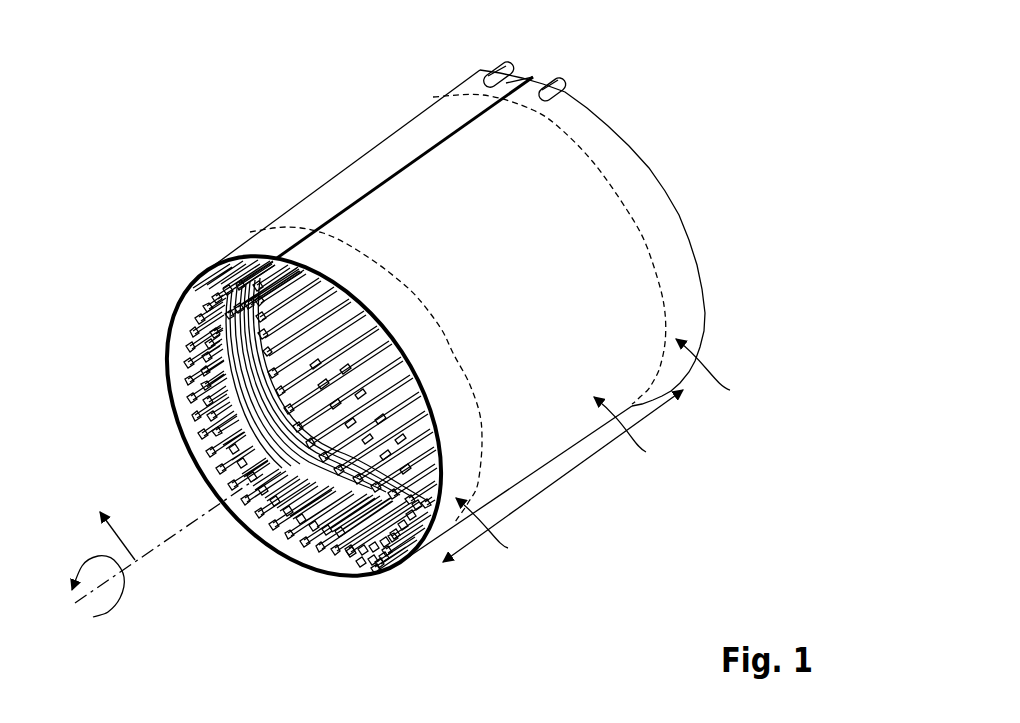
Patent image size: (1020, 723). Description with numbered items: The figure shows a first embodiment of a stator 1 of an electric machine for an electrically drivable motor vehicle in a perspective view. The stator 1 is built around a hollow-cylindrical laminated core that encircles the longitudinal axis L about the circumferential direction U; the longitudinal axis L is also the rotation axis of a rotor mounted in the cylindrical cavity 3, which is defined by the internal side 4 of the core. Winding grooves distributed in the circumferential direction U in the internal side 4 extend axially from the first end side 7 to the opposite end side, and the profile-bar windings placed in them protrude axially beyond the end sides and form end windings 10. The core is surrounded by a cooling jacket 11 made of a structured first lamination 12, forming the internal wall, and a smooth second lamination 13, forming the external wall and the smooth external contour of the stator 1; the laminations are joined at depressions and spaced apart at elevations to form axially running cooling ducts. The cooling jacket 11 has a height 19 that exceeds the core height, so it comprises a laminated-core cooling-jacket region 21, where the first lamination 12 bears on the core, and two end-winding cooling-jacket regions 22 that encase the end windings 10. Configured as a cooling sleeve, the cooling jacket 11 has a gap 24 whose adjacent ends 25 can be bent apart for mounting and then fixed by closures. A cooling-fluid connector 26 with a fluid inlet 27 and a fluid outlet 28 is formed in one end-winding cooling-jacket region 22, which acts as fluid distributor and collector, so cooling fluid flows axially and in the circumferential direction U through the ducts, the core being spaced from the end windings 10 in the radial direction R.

The stator 1 is at (688, 132).
The cylindrical cavity 3 is at (336, 440).
The internal side 4 is at (358, 468).
The first end side 7 is at (244, 262).
The end windings 10 is at (266, 500).
The cooling jacket 11 is at (397, 130).
The first lamination 12 is at (180, 318).
The second lamination 13 is at (306, 211).
The height 19 is at (580, 465).
The laminated-core cooling-jacket region 21 is at (634, 433).
The end-winding cooling-jacket regions 22 is at (607, 453).
The gap 24 is at (520, 86).
The ends 25 is at (366, 194).
The cooling-fluid connector 26 is at (512, 61).
The fluid inlet 27 is at (488, 80).
The fluid outlet 28 is at (567, 93).
The radial direction R is at (124, 543).
The longitudinal axis L is at (168, 543).
The circumferential direction U is at (117, 613).